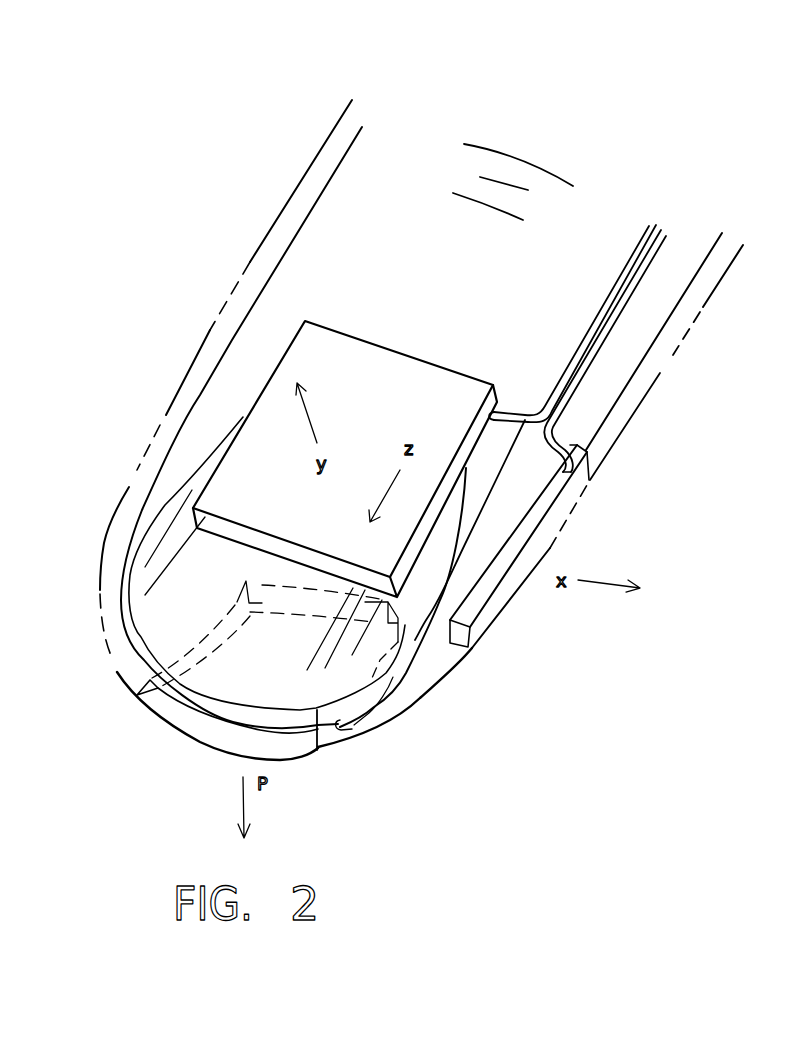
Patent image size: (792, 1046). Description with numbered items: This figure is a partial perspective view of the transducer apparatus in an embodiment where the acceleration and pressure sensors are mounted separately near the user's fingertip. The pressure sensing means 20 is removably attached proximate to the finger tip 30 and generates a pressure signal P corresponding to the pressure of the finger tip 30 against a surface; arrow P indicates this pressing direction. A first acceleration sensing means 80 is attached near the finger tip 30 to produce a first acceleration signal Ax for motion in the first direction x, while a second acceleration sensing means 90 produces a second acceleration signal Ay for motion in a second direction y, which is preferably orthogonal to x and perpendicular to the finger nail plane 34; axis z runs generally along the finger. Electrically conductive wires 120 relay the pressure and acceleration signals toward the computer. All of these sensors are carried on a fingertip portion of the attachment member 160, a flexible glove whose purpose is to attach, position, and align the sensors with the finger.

The pressure sensing means 20 is at (343, 743).
The finger tip 30 is at (407, 683).
The finger nail plane 34 is at (210, 601).
The first acceleration sensing means 80 is at (570, 509).
The second acceleration sensing means 90 is at (375, 340).
The electrically conductive wires 120 is at (611, 295).
The attachment member (flexible glove) 160 is at (673, 357).